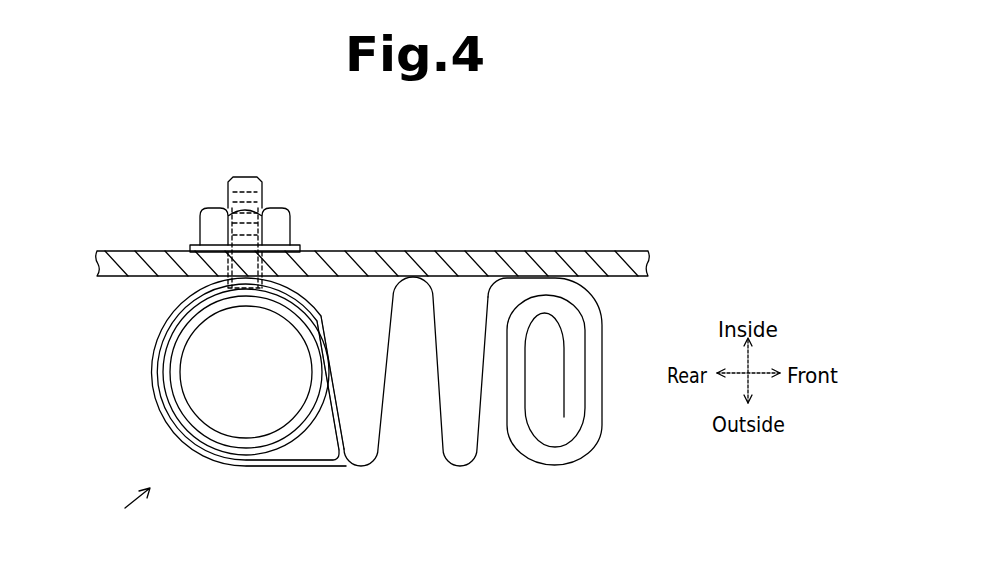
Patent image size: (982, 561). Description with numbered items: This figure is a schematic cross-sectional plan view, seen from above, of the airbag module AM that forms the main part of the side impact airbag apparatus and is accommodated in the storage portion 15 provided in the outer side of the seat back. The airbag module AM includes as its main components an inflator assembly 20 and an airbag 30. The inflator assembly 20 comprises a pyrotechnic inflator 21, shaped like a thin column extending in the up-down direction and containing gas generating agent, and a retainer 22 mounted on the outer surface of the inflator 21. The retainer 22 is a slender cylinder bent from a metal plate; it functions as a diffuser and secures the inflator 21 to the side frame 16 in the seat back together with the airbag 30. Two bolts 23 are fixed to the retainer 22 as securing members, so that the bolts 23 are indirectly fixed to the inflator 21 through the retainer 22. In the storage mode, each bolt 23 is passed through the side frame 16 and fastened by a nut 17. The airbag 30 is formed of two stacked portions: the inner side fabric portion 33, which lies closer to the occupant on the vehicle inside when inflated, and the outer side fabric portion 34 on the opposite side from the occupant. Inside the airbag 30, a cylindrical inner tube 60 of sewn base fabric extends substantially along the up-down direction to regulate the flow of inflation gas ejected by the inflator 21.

The storage portion 15 is at (357, 399).
The side frame 16 is at (522, 257).
The nut 17 is at (207, 226).
The inflator assembly 20 is at (198, 372).
The inflator 21 is at (190, 385).
The retainer 22 is at (170, 362).
The bolt 23 is at (245, 175).
The airbag 30 is at (553, 466).
The inner side fabric portion 33 is at (330, 310).
The outer side fabric portion 34 is at (332, 468).
The inner tube 60 is at (288, 468).
The airbag module AM is at (120, 510).